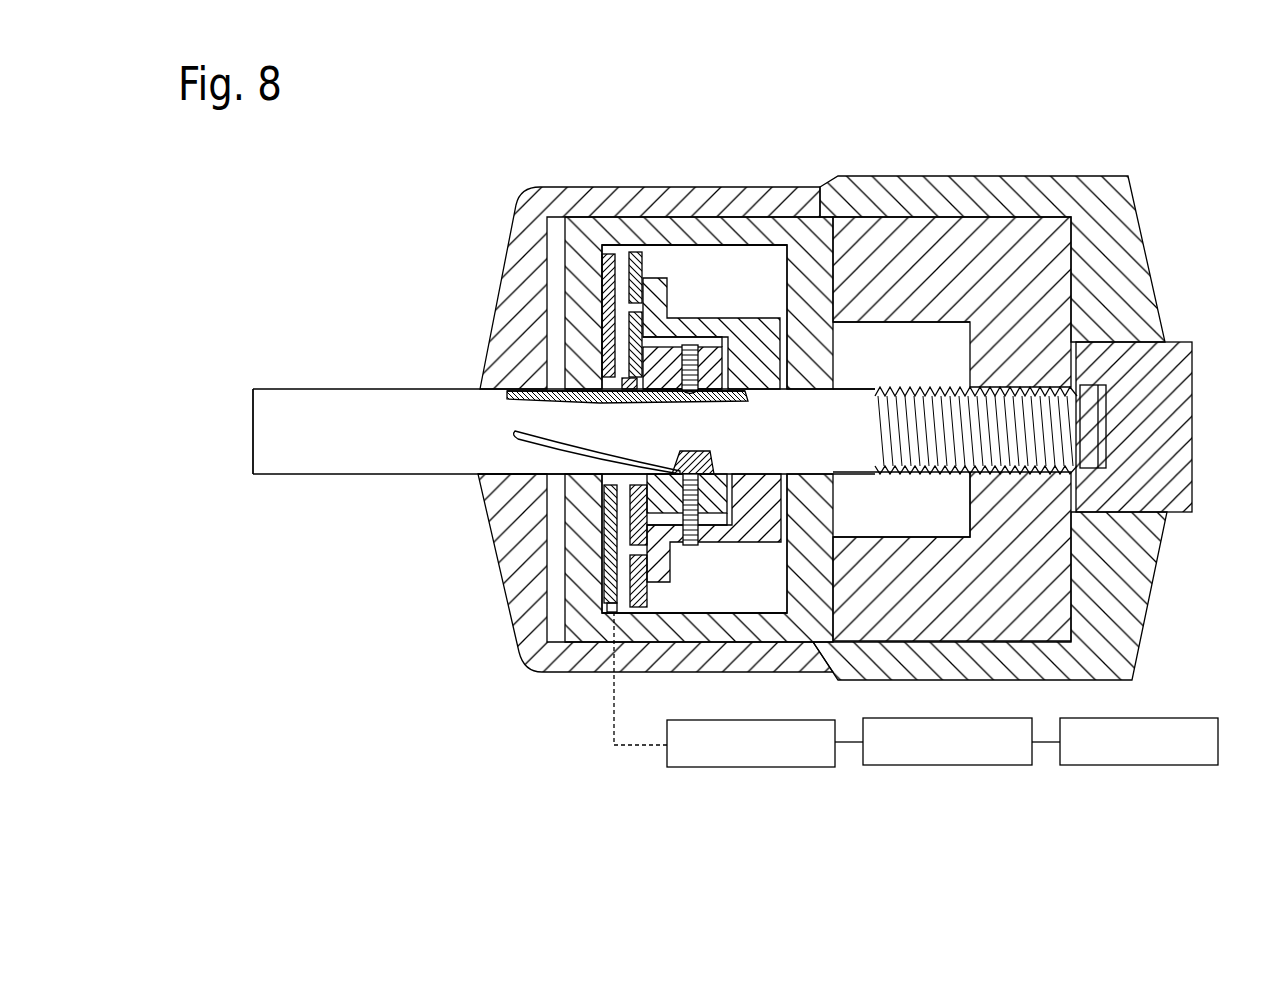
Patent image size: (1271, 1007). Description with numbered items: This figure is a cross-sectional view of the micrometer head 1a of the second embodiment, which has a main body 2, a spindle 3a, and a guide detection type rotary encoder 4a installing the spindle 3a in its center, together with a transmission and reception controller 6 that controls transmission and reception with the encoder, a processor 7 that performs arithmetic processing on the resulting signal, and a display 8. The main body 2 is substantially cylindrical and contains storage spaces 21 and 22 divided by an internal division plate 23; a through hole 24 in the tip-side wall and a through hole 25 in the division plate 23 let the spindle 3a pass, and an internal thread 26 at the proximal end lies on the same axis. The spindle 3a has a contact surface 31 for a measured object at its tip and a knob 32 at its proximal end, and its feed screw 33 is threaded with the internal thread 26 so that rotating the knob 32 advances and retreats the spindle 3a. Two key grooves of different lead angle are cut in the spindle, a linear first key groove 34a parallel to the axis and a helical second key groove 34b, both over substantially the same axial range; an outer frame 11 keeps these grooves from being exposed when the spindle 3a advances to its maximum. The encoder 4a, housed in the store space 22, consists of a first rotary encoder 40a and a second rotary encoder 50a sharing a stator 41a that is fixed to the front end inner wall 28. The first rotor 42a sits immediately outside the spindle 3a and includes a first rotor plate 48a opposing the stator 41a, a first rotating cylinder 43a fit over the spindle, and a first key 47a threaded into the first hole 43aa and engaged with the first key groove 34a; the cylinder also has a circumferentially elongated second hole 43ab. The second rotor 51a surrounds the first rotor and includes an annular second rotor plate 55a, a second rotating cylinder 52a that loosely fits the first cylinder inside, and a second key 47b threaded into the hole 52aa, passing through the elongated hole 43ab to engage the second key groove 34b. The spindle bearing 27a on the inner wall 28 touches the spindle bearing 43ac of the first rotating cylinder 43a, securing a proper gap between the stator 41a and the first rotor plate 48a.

The micrometer head 1a is at (1048, 148).
The main body 2 is at (863, 232).
The spindle 3a is at (854, 467).
The guide detection type rotary encoder 4a is at (655, 246).
The first rotary encoder 40a is at (694, 177).
The second rotary encoder 50a is at (694, 361).
The transmission and reception controller 6 is at (745, 767).
The processor 7 is at (947, 765).
The display 8 is at (1143, 765).
The outer frame 11 is at (518, 222).
The storage space 21 is at (918, 346).
The storage space 22 is at (662, 612).
The division plate 23 is at (833, 527).
The through hole 24 is at (495, 468).
The through hole 25 is at (838, 387).
The internal thread 26 is at (1030, 397).
The spindle bearing 27a is at (597, 443).
The front end inner wall 28 is at (565, 343).
The contact surface 31 is at (253, 418).
The knob 32 is at (1187, 432).
The feed screw 33 is at (938, 473).
The first key groove 34a is at (507, 412).
The second key groove 34b is at (522, 448).
The stator 41a is at (605, 289).
The first rotor 42a is at (646, 356).
The first rotating cylinder 43a is at (617, 427).
The first hole 43aa is at (685, 343).
The second hole 43ab is at (710, 452).
The spindle bearing 43ac is at (649, 424).
The first key 47a is at (690, 385).
The second key 47b is at (686, 545).
The first rotor plate 48a is at (614, 398).
The second rotor 51a is at (734, 545).
The second rotating cylinder 52a is at (663, 568).
The hole 52aa is at (700, 493).
The second rotor plate 55a is at (650, 593).